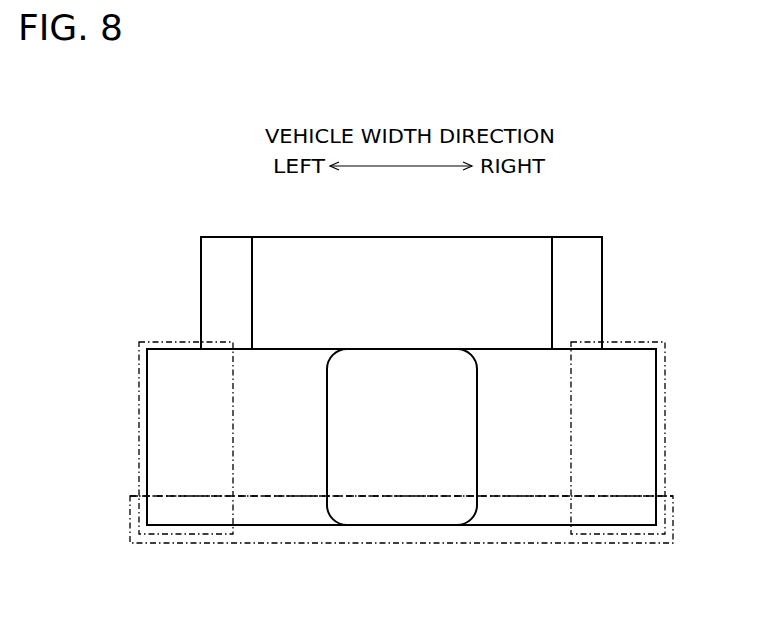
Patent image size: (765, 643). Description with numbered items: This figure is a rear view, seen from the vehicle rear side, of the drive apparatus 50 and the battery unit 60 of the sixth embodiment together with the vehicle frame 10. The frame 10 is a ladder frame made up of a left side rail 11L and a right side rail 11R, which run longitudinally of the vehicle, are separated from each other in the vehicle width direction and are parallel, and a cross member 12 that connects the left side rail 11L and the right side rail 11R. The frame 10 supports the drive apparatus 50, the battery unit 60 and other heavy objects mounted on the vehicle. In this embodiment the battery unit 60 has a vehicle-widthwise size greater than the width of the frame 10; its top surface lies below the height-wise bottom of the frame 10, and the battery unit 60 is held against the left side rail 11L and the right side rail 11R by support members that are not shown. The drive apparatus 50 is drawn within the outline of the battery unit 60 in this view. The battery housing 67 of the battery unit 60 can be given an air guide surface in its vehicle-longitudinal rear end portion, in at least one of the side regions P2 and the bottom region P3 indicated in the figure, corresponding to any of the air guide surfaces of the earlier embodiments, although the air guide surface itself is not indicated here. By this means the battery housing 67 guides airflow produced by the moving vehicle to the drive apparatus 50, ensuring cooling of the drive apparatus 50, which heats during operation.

The frame 10 is at (404, 270).
The left side rail 11L is at (227, 247).
The right side rail 11R is at (577, 247).
The cross member 12 is at (405, 247).
The battery unit 60 is at (401, 474).
The battery housing 67 is at (280, 482).
The drive apparatus 50 is at (403, 482).
The side region P2 is at (140, 398).
The bottom region P3 is at (493, 545).